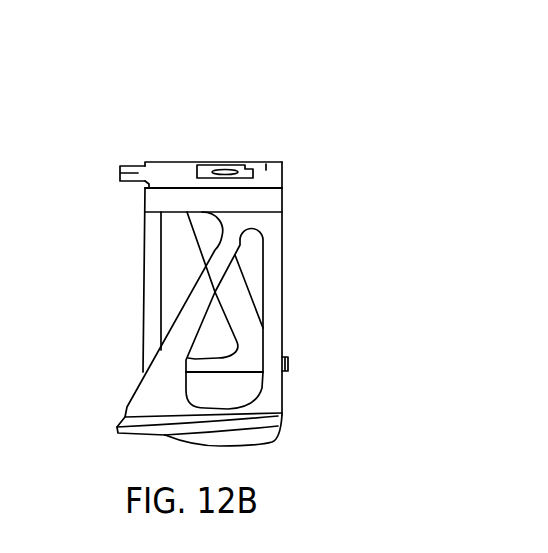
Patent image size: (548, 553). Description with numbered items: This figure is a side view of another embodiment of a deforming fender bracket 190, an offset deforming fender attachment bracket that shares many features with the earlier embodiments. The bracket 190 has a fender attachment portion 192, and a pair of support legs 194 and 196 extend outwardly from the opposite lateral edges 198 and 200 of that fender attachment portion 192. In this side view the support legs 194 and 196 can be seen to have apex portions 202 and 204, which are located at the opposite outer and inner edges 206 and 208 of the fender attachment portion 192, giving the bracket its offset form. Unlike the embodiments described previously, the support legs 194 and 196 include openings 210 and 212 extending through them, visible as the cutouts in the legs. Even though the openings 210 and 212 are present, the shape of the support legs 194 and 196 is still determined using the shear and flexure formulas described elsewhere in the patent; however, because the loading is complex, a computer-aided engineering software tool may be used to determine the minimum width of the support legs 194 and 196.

The deforming fender bracket 190 is at (284, 112).
The fender attachment portion 192 is at (168, 148).
The support leg 194 is at (302, 305).
The support leg 196 is at (125, 278).
The lateral edge 198 is at (263, 185).
The lateral edge 200 is at (205, 161).
The apex portion 202 is at (292, 243).
The apex portion 204 is at (138, 230).
The outer edge 206 is at (143, 171).
The inner edge 208 is at (282, 173).
The opening 210 is at (243, 362).
The opening 212 is at (167, 297).